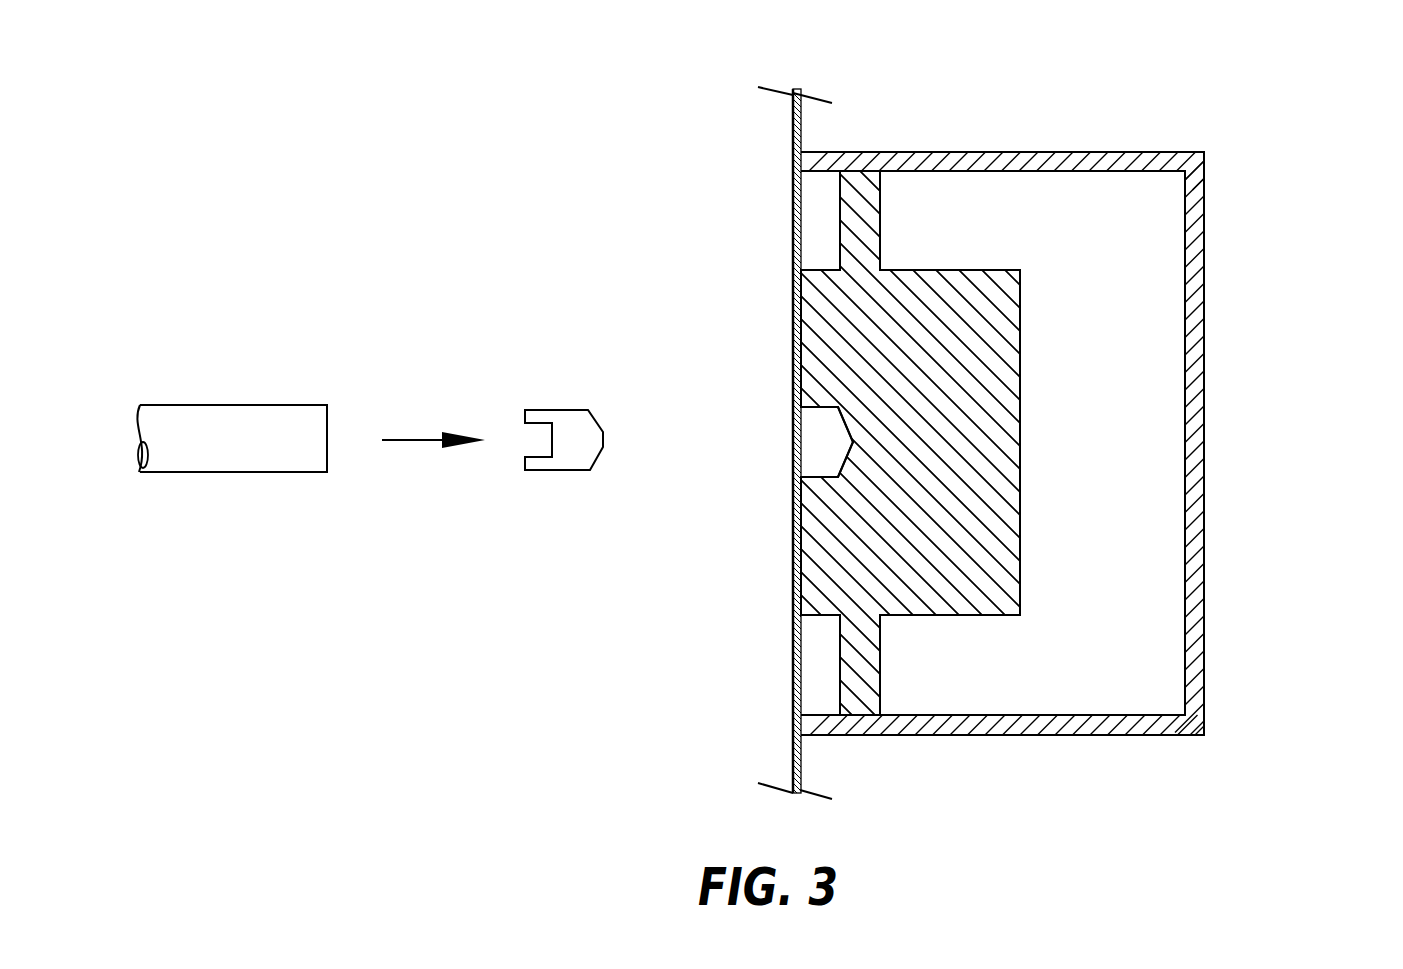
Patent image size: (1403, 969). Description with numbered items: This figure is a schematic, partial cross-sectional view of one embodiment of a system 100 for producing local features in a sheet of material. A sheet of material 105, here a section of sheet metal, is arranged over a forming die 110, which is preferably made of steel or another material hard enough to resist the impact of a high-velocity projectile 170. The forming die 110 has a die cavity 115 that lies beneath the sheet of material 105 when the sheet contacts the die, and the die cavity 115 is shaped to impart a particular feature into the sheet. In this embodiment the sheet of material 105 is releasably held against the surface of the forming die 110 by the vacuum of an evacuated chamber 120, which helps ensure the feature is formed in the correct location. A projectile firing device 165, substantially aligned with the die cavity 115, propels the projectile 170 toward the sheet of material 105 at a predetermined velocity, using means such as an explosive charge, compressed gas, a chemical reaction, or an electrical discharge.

The system 100 is at (356, 130).
The sheet of material 105 is at (793, 225).
The forming die 110 is at (818, 568).
The die cavity 115 is at (812, 442).
The evacuated chamber 120 is at (1147, 327).
The projectile firing device 165 is at (283, 453).
The projectile 170 is at (577, 422).